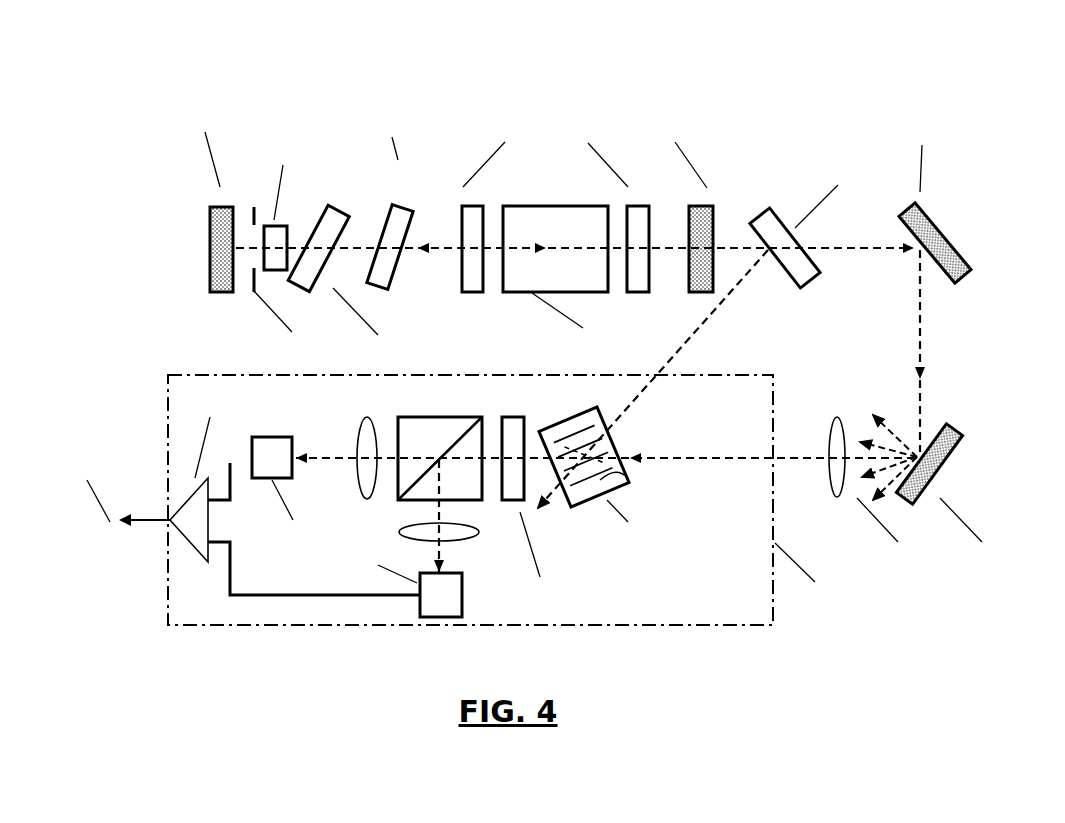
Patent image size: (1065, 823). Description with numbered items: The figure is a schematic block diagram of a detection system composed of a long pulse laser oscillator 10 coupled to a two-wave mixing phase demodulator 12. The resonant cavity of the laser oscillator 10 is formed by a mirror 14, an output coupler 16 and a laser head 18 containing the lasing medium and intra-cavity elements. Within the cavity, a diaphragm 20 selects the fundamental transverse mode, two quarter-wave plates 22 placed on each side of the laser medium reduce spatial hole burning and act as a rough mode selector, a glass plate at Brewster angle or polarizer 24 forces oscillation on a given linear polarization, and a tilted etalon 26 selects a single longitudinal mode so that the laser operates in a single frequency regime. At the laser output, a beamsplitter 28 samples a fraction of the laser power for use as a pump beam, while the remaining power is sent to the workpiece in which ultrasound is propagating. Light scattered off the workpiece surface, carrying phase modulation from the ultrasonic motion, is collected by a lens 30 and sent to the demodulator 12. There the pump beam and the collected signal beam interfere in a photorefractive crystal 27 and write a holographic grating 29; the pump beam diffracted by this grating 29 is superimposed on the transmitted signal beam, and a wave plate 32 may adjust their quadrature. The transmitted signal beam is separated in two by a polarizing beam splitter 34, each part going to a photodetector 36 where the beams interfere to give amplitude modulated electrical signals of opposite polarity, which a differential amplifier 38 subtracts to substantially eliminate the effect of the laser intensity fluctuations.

The long pulse laser oscillator 10 is at (594, 60).
The two-wave mixing phase demodulator 12 is at (675, 627).
The mirror 14 is at (212, 248).
The output coupler 16 is at (697, 206).
The laser head 18 is at (543, 206).
The diaphragm 20 is at (256, 207).
The quarter-wave plates 22 is at (473, 206).
The glass plate at Brewster angle or polarizer 24 is at (385, 208).
The tilted etalon 26 is at (323, 232).
The photorefractive crystal 27 is at (607, 428).
The beamsplitter 28 is at (793, 283).
The holographic grating 29 is at (628, 483).
The lens 30 is at (847, 497).
The wave plate 32 is at (502, 403).
The polarizing beam splitter 34 is at (423, 404).
The photodetector 36 is at (271, 448).
The differential amplifier 38 is at (197, 535).